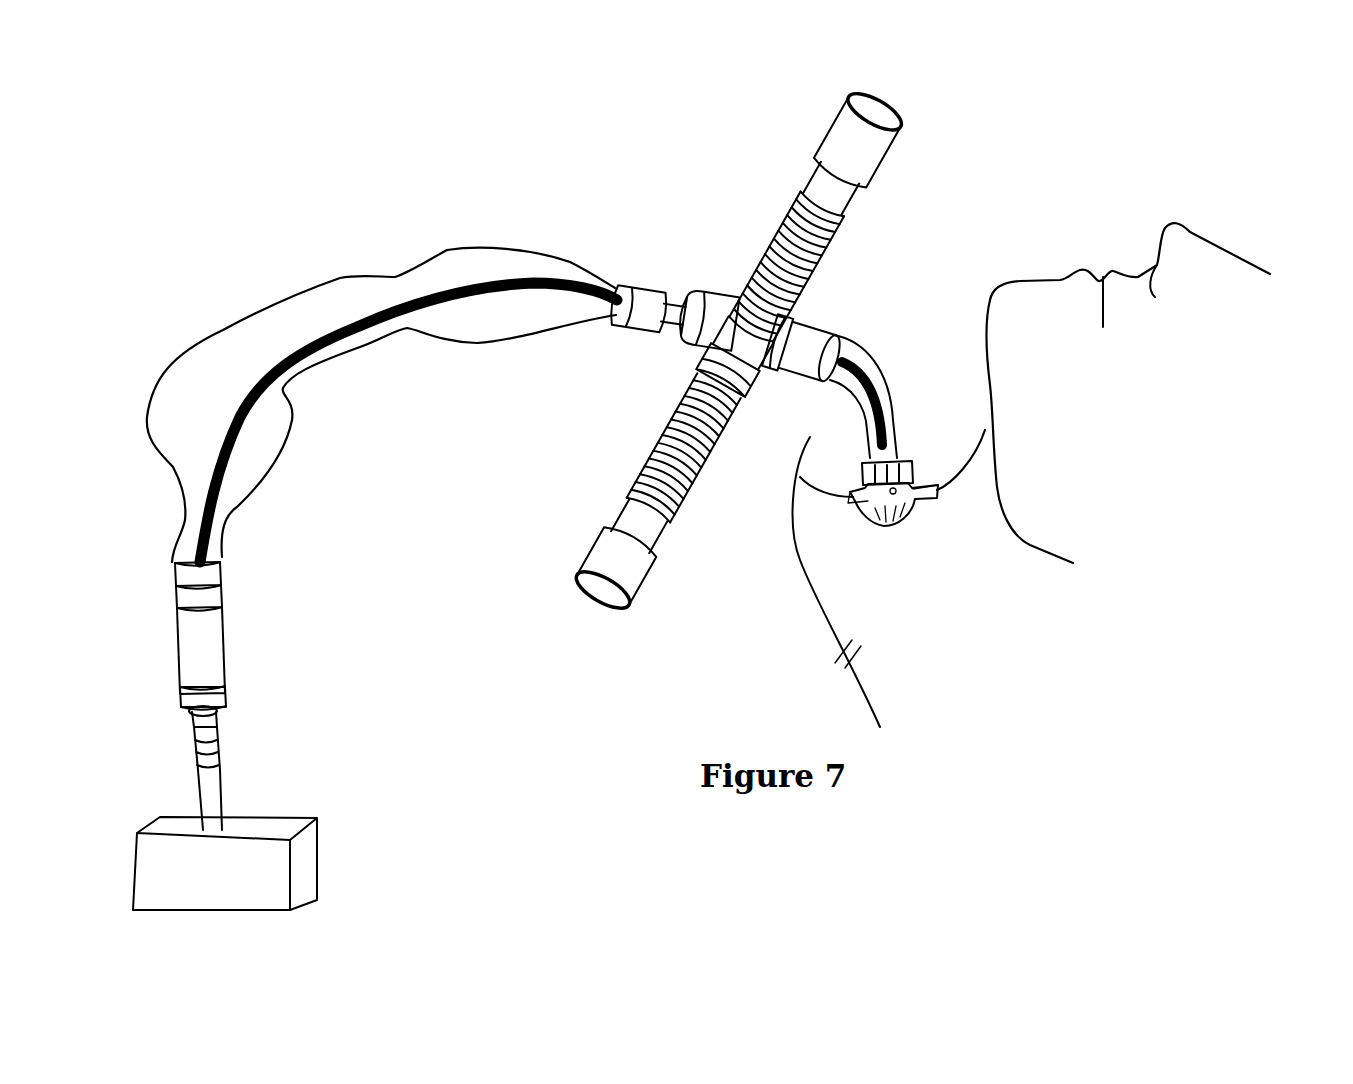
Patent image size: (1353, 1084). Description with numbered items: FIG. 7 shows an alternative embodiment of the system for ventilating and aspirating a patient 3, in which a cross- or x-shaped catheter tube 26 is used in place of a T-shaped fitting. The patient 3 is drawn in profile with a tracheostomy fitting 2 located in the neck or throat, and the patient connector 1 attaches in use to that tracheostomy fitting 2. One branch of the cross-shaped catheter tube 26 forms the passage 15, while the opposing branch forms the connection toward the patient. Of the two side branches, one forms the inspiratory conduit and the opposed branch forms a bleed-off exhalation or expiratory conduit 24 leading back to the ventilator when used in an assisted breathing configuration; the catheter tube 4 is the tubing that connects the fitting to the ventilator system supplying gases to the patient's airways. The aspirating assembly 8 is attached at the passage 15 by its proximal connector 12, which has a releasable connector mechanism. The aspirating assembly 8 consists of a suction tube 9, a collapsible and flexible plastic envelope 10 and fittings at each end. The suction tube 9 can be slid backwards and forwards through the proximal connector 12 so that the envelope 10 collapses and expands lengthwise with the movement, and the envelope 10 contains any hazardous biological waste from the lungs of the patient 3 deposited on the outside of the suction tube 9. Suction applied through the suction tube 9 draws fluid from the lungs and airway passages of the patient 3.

The aspirating assembly 8 is at (388, 202).
The suction tube 9 is at (268, 375).
The plastic envelope 10 is at (488, 246).
The proximal connector 12 is at (693, 307).
The passage 15 is at (728, 307).
The patient connector 1 is at (805, 343).
The expiratory conduit 24 is at (800, 178).
The catheter tube 4 is at (640, 470).
The cross-shaped catheter tube 26 is at (745, 355).
The tracheostomy fitting 2 is at (912, 465).
The patient 3 is at (1033, 312).